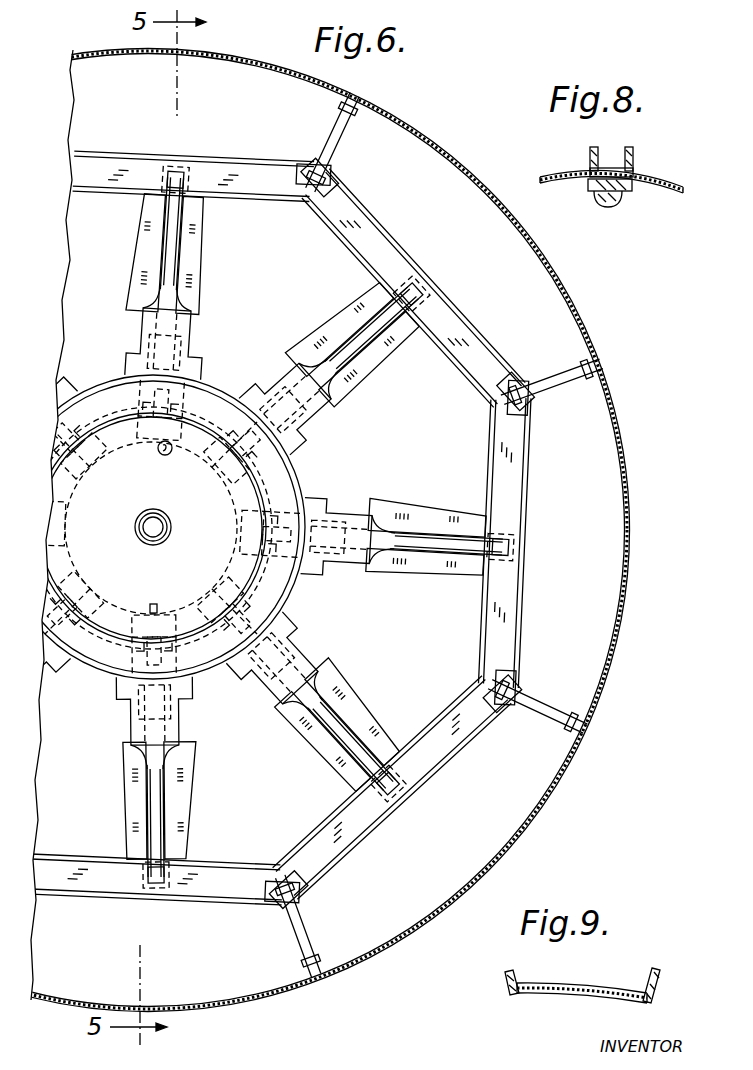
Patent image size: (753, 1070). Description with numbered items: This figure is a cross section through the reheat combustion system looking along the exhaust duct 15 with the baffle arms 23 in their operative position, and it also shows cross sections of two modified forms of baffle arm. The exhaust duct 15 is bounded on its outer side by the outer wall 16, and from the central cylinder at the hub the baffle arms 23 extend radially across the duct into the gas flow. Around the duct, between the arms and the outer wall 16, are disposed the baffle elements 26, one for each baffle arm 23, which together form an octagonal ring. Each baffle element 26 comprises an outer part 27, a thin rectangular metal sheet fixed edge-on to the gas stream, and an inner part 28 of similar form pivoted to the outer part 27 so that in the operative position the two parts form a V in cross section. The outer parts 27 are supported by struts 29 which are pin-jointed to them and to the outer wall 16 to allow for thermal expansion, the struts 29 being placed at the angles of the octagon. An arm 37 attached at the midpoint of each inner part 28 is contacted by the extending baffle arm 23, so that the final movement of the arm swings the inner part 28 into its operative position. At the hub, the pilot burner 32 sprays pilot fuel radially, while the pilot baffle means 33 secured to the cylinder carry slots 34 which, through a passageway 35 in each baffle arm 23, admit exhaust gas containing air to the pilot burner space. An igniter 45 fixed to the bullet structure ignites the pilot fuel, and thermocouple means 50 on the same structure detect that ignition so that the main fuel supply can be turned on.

The exhaust duct 15 is at (519, 287).
The outer wall 16 is at (410, 128).
The baffle arm 23 is at (330, 333).
The baffle element 26 is at (250, 157).
The outer part 27 is at (213, 163).
The inner part 28 is at (342, 238).
The strut 29 is at (341, 131).
The pilot burner 32 is at (150, 531).
The pilot baffle means 33 is at (122, 433).
The slot 34 is at (208, 393).
The passageway 35 is at (150, 428).
The arm 37 is at (163, 172).
The igniter 45 is at (168, 455).
The thermocouple means 50 is at (157, 603).